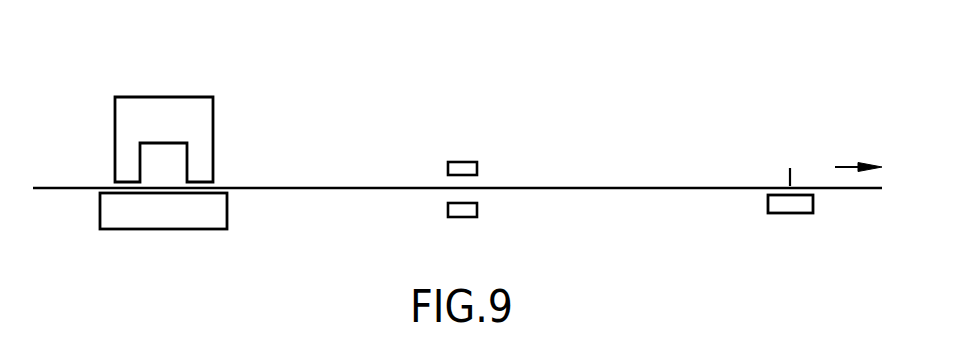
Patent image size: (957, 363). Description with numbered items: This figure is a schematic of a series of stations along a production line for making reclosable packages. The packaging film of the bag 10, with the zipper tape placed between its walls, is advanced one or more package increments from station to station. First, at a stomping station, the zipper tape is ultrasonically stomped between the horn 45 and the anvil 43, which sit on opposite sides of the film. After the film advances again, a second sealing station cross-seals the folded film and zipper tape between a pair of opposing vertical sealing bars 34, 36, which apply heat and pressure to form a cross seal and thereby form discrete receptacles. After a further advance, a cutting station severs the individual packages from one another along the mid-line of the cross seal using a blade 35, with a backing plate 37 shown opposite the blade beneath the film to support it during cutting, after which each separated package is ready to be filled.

The reclosable package or bag 10 is at (295, 188).
The horn 45 is at (223, 85).
The anvil 43 is at (200, 229).
The vertical sealing bar 34 is at (477, 165).
The vertical sealing bar 36 is at (477, 215).
The blade 35 is at (787, 170).
The detector 37 is at (787, 213).